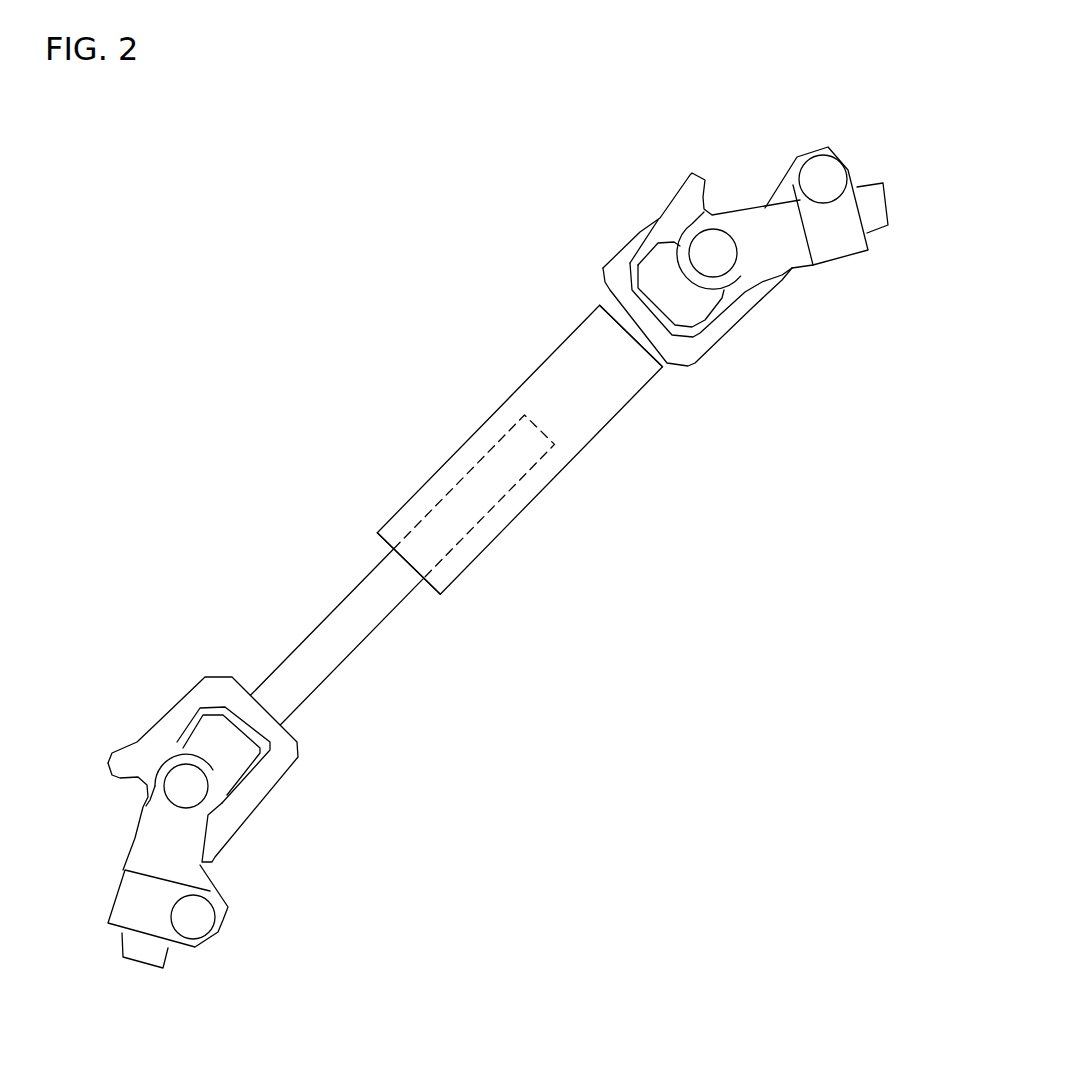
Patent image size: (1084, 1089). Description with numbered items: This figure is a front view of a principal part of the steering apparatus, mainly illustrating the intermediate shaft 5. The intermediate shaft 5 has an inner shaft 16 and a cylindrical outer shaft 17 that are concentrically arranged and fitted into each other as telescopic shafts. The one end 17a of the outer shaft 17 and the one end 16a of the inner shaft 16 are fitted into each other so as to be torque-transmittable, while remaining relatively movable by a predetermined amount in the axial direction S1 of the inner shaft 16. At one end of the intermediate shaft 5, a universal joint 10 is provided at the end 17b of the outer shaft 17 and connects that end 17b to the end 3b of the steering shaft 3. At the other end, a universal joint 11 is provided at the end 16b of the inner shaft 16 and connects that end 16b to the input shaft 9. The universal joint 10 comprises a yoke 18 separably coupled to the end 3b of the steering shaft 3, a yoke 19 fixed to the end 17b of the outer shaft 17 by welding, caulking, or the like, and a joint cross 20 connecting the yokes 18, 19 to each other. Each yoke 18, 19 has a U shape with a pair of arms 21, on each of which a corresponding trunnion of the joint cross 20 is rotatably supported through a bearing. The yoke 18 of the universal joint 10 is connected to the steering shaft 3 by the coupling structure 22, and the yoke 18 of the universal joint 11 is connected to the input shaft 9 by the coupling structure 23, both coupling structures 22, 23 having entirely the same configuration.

The steering shaft 3 is at (890, 200).
The end of the steering shaft 3b is at (867, 197).
The intermediate shaft 5 is at (479, 545).
The input shaft 9 is at (168, 953).
The universal joint 10 is at (512, 505).
The universal joint 11 is at (241, 939).
The inner shaft 16 is at (362, 642).
The one end of the inner shaft 16a is at (450, 490).
The end of the inner shaft 16b is at (302, 705).
The outer shaft 17 is at (557, 473).
The one end of the outer shaft 17a is at (452, 585).
The end of the outer shaft 17b is at (657, 372).
The yoke 18 is at (810, 150).
The yoke 19 is at (665, 208).
The joint cross 20 is at (718, 247).
The arms 21 is at (763, 233).
The coupling structure 22 is at (860, 273).
The coupling structure 23 is at (235, 952).
The axial direction S1 is at (100, 842).